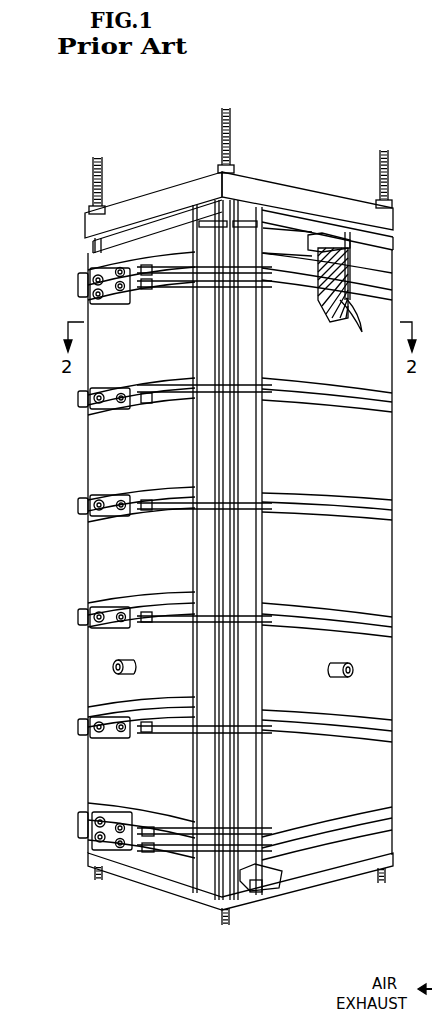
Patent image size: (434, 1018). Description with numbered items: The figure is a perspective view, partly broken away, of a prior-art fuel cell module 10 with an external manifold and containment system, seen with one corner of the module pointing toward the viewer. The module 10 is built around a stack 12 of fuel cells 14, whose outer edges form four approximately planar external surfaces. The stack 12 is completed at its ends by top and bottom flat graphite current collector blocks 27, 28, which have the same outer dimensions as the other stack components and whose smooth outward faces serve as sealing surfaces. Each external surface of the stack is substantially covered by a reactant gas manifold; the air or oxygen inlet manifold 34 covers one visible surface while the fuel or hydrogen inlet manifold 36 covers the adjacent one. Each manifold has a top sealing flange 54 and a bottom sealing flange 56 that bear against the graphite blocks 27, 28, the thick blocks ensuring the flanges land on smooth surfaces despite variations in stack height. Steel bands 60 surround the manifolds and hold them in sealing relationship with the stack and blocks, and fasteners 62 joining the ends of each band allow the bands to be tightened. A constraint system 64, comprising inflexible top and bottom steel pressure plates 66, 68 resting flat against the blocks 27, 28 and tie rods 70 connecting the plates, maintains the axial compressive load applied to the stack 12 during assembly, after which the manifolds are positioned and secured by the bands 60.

The fuel cell module 10 is at (94, 110).
The stack 12 is at (340, 256).
The fuel cell 14 is at (352, 318).
The top graphite current collector block 27 is at (340, 230).
The bottom graphite current collector block 28 is at (247, 882).
The air inlet manifold 34 is at (355, 445).
The fuel inlet manifold 36 is at (130, 446).
The top sealing flange 54 is at (306, 240).
The bottom sealing flange 56 is at (250, 868).
The steel band 60 is at (252, 618).
The fastener 62 is at (108, 605).
The constraint system 64 is at (307, 183).
The top pressure plate 66 is at (158, 205).
The bottom pressure plate 68 is at (176, 900).
The tie rod 70 is at (91, 190).